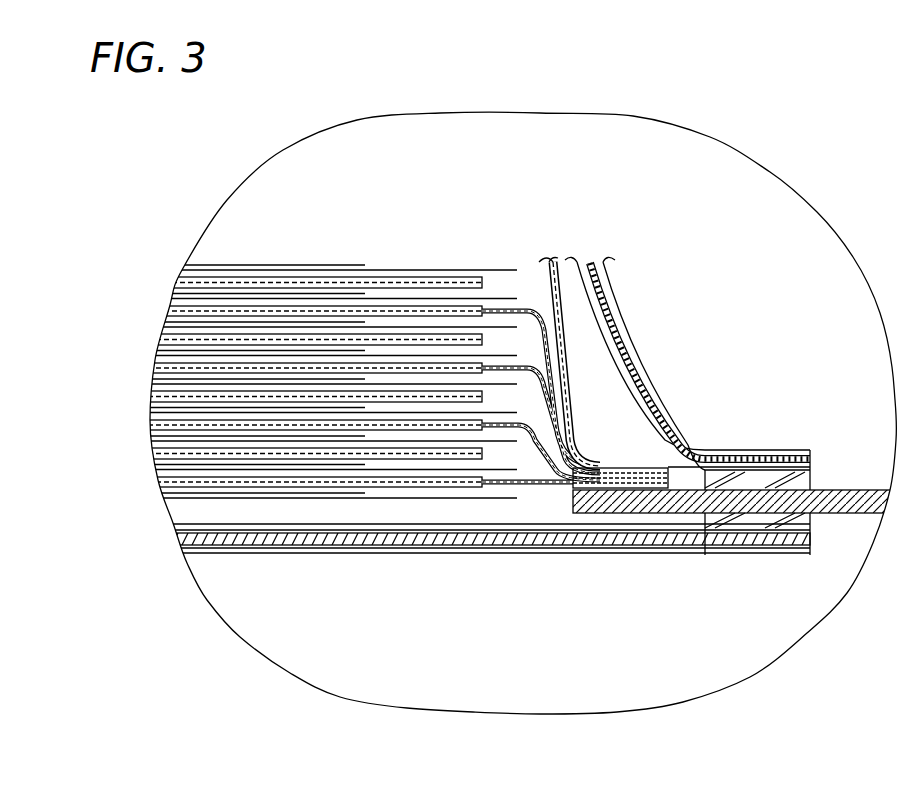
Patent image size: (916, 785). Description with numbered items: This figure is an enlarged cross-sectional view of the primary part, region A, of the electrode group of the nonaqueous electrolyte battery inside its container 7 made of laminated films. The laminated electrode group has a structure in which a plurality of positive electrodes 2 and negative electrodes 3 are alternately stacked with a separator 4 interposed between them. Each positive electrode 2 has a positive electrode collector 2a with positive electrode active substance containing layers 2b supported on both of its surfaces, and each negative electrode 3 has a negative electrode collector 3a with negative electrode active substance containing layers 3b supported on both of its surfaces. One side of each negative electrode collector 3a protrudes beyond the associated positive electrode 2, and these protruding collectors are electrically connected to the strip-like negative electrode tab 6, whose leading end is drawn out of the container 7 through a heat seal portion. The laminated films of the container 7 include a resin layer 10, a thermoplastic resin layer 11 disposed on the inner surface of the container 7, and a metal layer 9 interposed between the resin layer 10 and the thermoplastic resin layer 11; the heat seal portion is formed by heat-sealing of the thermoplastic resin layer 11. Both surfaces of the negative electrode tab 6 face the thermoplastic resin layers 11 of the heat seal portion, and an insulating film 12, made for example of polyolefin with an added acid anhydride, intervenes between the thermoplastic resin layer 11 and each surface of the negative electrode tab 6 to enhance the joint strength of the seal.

The positive electrode 2 is at (260, 373).
The positive electrode collector 2a is at (152, 453).
The positive electrode active substance containing layer 2b is at (152, 448).
The negative electrode 3 is at (336, 435).
The negative electrode collector 3a is at (158, 483).
The negative electrode active substance containing layer 3b is at (158, 479).
The separator 4 is at (385, 270).
The negative electrode tab 6 is at (843, 515).
The container 7 is at (519, 447).
The metal layer 9 is at (807, 462).
The resin layer 10 is at (807, 452).
The thermoplastic resin layer 11 is at (807, 470).
The insulating film 12 is at (792, 522).
The enlarged region A is at (597, 713).